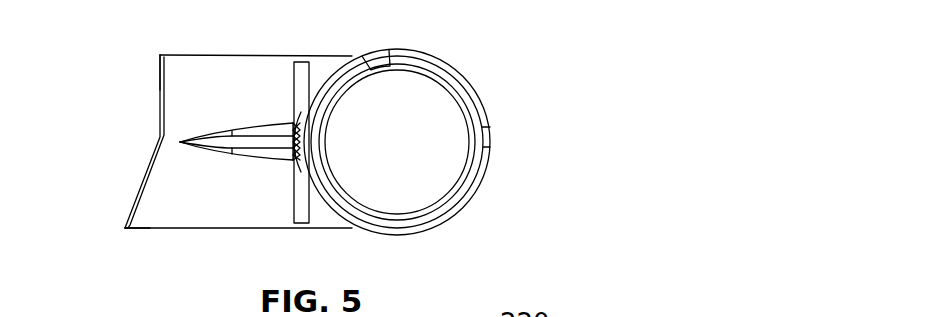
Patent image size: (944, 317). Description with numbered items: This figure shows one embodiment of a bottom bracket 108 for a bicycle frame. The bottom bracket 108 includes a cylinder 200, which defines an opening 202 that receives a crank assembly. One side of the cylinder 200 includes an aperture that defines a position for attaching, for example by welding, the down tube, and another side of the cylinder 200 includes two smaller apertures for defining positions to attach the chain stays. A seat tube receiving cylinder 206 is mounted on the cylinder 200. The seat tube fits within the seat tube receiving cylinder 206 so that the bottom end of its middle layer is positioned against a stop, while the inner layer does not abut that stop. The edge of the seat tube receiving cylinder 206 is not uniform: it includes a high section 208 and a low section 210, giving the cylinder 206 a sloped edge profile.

The bottom bracket 108 is at (458, 54).
The cylinder 200 is at (485, 111).
The opening 202 is at (425, 167).
The seat tube receiving cylinder 206 is at (198, 63).
The high section 208 is at (125, 228).
The low section 210 is at (160, 58).